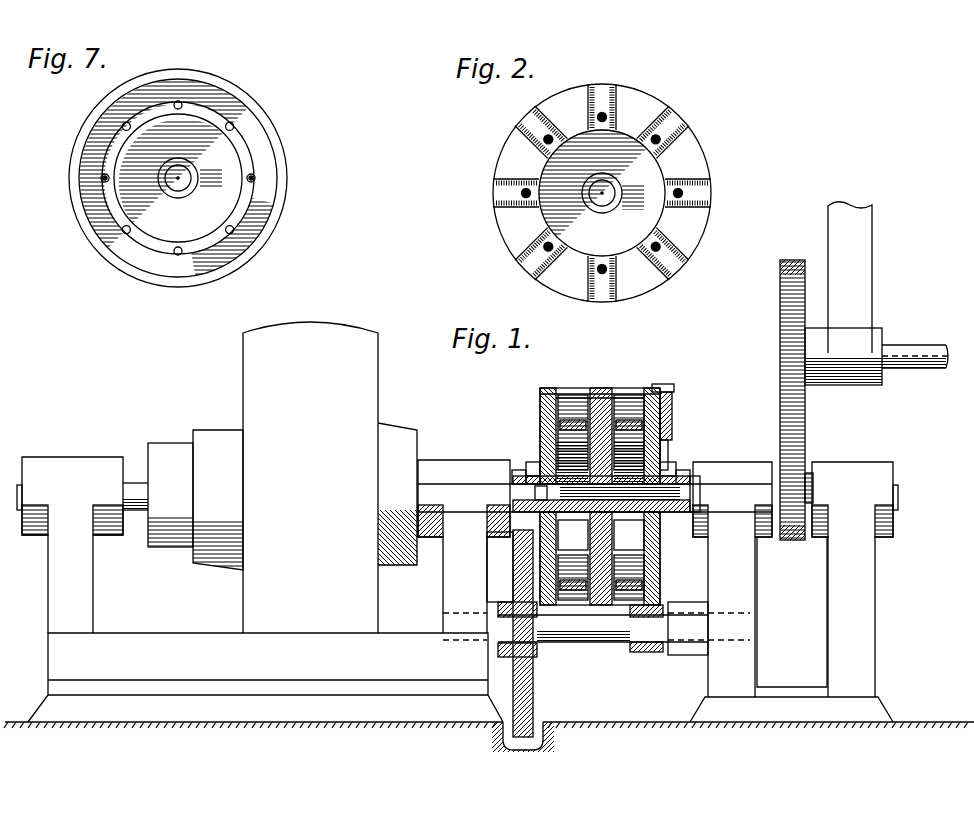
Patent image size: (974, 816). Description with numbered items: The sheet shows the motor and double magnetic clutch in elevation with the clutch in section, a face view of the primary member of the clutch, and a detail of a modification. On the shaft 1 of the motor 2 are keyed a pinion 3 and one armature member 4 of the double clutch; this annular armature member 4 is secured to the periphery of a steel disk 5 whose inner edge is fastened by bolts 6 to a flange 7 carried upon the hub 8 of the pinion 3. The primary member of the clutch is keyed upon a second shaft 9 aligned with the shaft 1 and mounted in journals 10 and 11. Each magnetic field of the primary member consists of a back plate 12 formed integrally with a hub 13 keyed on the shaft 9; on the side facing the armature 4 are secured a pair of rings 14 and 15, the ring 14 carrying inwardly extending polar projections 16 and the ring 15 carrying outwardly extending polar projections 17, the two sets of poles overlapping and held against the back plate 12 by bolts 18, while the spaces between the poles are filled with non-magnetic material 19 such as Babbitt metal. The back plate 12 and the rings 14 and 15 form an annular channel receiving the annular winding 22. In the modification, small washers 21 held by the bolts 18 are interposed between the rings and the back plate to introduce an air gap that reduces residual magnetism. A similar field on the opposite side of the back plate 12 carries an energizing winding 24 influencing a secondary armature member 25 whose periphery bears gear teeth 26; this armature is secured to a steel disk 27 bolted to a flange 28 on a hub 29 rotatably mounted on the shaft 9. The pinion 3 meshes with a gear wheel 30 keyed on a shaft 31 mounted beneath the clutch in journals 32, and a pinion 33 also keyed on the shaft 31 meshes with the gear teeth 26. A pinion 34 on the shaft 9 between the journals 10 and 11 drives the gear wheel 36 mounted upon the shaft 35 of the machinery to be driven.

In FIG. 1, the shaft 1 is at (512, 498).
In FIG. 1, the motor 2 is at (336, 333).
In FIG. 1, the pinion 3 is at (528, 476).
In FIG. 1, the armature member 4 is at (548, 396).
In FIG. 1, the steel disk 5 is at (540, 405).
In FIG. 1, the bolts 6 is at (540, 495).
In FIG. 1, the flange 7 is at (534, 462).
In FIG. 1, the hub 8 is at (516, 474).
In FIG. 1, the second shaft 9 is at (682, 472).
In FIG. 1, the journal 10 is at (735, 466).
In FIG. 1, the journal 11 is at (847, 466).
In FIG. 7, the back plate 12 is at (246, 108).
In FIG. 2, the back plate 12 is at (645, 193).
In FIG. 1, the back plate 12 is at (601, 392).
In FIG. 2, the hub 13 is at (601, 210).
In FIG. 1, the hub 13 is at (620, 495).
In FIG. 1, the ring 14 is at (580, 396).
In FIG. 1, the ring 15 is at (555, 394).
In FIG. 2, the polar projections 16 is at (638, 101).
In FIG. 2, the polar projections 17 is at (605, 93).
In FIG. 7, the bolts 18 is at (258, 177).
In FIG. 2, the bolts 18 is at (690, 144).
In FIG. 1, the bolts 18 is at (584, 402).
In FIG. 2, the non-magnetic material 19 is at (664, 117).
In FIG. 1, the non-magnetic material 19 is at (572, 394).
In FIG. 7, the washers 21 is at (254, 176).
In FIG. 1, the annular winding 22 is at (592, 396).
In FIG. 1, the energizing winding 24 is at (620, 400).
In FIG. 1, the armature member 25 is at (670, 400).
In FIG. 1, the gear teeth 26 is at (661, 384).
In FIG. 1, the steel disk 27 is at (664, 436).
In FIG. 1, the flange 28 is at (667, 462).
In FIG. 1, the hub 29 is at (694, 478).
In FIG. 1, the gear wheel 30 is at (533, 688).
In FIG. 1, the shaft 31 is at (617, 643).
In FIG. 1, the journals 32 is at (498, 650).
In FIG. 1, the pinion 33 is at (650, 652).
In FIG. 1, the pinion 34 is at (812, 498).
In FIG. 1, the shaft 35 is at (903, 350).
In FIG. 1, the gear wheel 36 is at (780, 315).